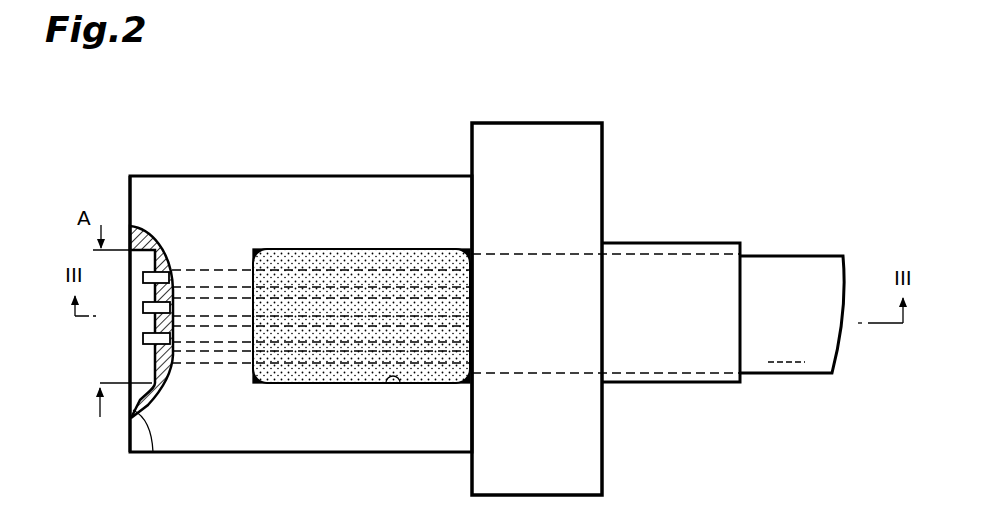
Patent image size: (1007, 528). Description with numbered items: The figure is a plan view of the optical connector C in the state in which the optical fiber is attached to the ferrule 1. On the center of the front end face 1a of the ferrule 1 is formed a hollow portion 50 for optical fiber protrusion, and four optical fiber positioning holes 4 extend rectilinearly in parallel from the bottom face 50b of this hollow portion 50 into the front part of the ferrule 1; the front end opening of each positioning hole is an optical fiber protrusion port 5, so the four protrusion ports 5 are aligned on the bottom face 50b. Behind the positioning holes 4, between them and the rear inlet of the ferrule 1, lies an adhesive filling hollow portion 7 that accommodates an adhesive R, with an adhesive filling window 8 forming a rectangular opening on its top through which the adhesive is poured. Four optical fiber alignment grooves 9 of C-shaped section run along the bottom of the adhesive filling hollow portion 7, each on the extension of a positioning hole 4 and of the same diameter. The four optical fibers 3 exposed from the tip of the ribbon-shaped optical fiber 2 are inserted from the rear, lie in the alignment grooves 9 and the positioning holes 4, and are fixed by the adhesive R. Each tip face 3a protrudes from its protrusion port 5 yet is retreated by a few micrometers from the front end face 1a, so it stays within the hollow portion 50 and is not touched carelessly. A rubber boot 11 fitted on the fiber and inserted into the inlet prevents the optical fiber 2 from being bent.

The ferrule 1 is at (276, 172).
The front end face 1a is at (130, 225).
The ribbon-shaped optical fiber 2 is at (796, 250).
The optical fiber 3 is at (173, 368).
The tip face 3a is at (146, 306).
The optical fiber positioning hole 4 is at (195, 270).
The optical fiber protrusion port 5 is at (146, 270).
The adhesive filling hollow portion 7 is at (312, 363).
The adhesive filling window 8 is at (392, 378).
The optical fiber alignment groove 9 is at (337, 242).
The boot 11 is at (667, 258).
The hollow portion for optical fiber protrusion 50 is at (133, 368).
The bottom face 50b is at (153, 452).
The optical connector C is at (618, 118).
The adhesive R is at (388, 275).